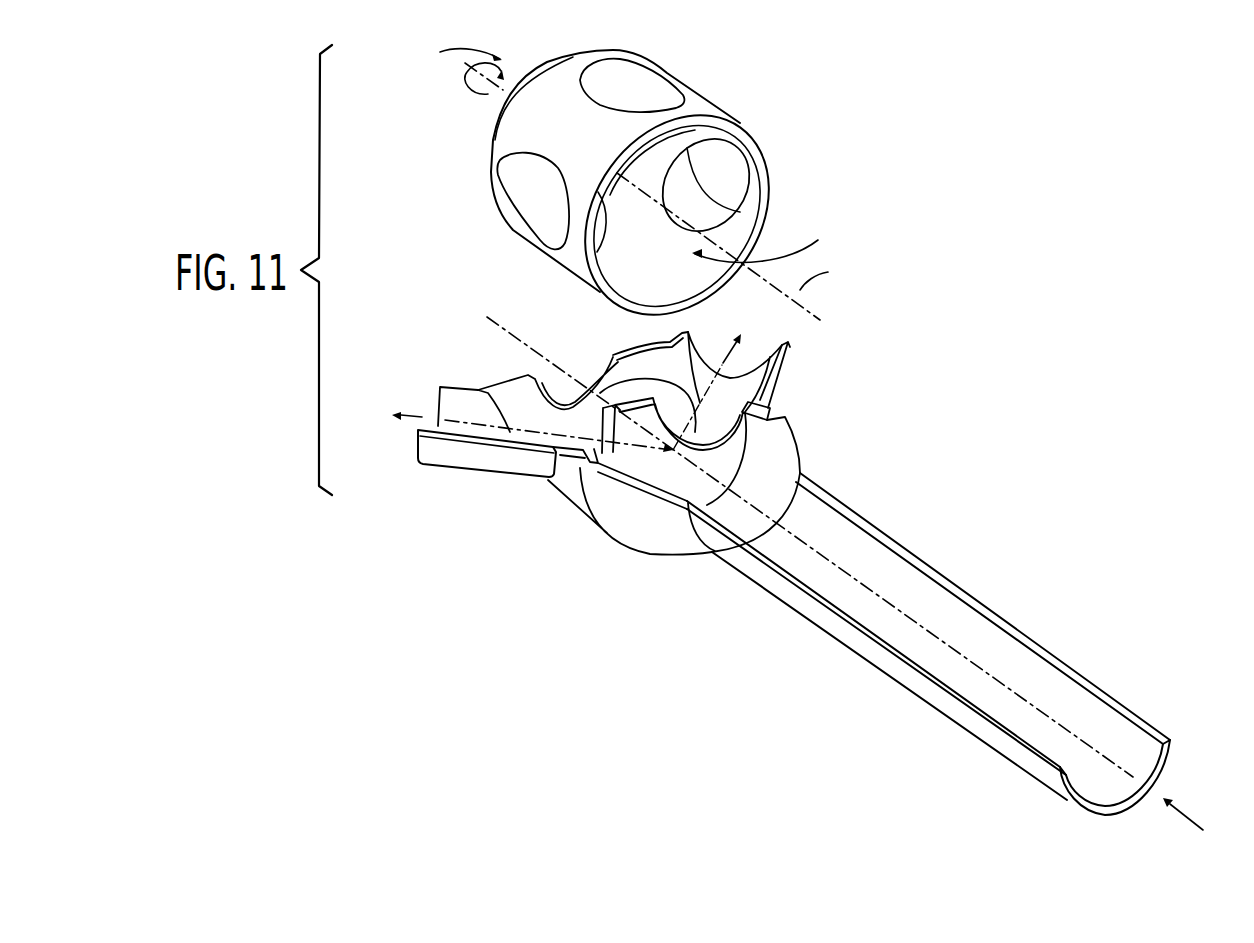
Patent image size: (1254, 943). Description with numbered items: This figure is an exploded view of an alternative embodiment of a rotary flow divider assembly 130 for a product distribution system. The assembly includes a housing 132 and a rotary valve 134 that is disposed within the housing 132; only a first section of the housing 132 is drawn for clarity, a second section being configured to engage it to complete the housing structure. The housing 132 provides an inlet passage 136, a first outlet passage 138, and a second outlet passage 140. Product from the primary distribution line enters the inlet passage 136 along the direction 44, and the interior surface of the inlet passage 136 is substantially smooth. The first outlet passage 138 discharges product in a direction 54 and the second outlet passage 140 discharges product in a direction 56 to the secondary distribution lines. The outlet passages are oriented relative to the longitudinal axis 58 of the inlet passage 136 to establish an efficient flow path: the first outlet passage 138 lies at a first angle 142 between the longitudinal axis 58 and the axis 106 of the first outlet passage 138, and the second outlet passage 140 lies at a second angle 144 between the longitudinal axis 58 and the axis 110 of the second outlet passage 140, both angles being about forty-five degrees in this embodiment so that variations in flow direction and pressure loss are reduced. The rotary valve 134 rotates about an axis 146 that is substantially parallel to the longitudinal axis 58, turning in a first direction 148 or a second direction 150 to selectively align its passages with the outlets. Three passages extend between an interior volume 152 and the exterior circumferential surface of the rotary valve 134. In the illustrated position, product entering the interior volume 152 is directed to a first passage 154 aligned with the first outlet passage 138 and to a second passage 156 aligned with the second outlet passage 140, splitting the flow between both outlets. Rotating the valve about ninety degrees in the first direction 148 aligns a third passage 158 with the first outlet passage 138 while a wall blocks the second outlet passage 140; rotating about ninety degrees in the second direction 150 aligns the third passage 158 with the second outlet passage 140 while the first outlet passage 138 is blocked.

The rotary flow divider assembly 130 is at (791, 544).
The housing 132 is at (794, 561).
The rotary valve 134 is at (631, 199).
The inlet passage 136 is at (987, 607).
The first outlet passage 138 is at (494, 462).
The second outlet passage 140 is at (777, 384).
The first angle 142 is at (575, 398).
The second angle 144 is at (652, 385).
The axis 146 is at (831, 274).
The first direction 148 is at (487, 100).
The second direction 150 is at (451, 59).
The interior volume 152 is at (772, 245).
The first passage 154 is at (543, 225).
The second passage 156 is at (743, 180).
The third passage 158 is at (660, 74).
The axis 106 is at (457, 422).
The axis 110 is at (703, 385).
The direction 54 is at (422, 417).
The direction 56 is at (723, 363).
The longitudinal axis 58 is at (1007, 688).
The direction 44 is at (1193, 820).